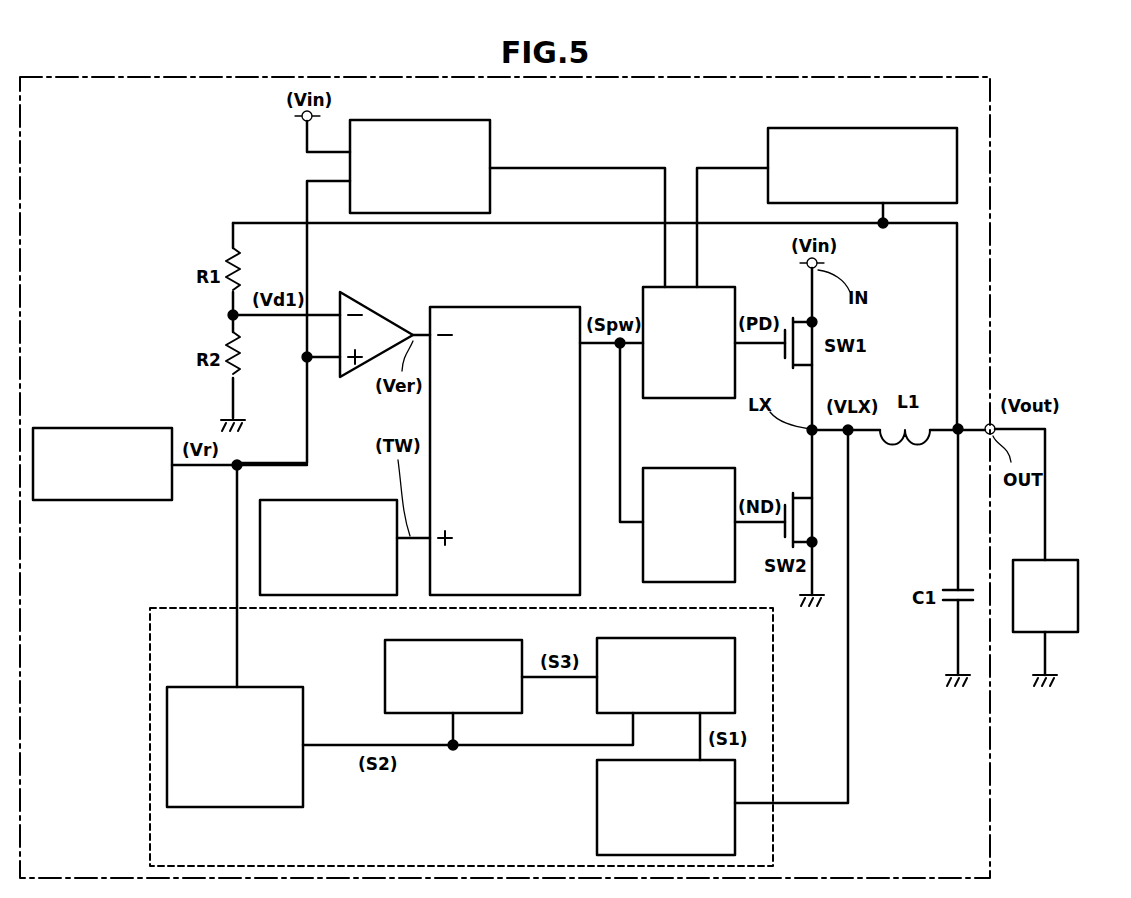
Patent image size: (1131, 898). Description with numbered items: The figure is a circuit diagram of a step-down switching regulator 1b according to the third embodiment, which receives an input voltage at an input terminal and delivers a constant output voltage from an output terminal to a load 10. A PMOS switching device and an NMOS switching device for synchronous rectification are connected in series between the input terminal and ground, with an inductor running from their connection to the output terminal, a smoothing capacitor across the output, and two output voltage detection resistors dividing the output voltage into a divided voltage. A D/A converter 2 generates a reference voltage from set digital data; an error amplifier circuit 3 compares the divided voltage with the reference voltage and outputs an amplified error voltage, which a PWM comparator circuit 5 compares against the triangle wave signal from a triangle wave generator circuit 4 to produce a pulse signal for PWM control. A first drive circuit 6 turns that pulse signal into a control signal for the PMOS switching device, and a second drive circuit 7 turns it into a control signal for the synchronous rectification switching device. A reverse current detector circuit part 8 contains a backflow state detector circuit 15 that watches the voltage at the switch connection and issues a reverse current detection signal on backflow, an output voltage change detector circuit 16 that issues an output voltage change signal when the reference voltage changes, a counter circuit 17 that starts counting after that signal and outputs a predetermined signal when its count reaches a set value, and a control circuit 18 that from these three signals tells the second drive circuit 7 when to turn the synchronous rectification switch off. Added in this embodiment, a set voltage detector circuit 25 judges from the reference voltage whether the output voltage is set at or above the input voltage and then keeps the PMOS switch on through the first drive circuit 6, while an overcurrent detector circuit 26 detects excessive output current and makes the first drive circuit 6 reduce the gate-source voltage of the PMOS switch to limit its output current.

The switching regulator 1b is at (819, 77).
The D/A converter 2 is at (105, 428).
The error amplifier circuit 3 is at (365, 310).
The triangle wave generator circuit 4 is at (332, 500).
The PWM comparator circuit 5 is at (518, 307).
The first drive circuit 6 is at (718, 287).
The second drive circuit 7 is at (718, 468).
The reverse current detector circuit part 8 is at (148, 740).
The load 10 is at (1058, 560).
The backflow state detector circuit 15 is at (597, 803).
The output voltage change detector circuit 16 is at (283, 687).
The counter circuit 17 is at (460, 640).
The control circuit 18 is at (675, 638).
The set voltage detector circuit 25 is at (428, 120).
The overcurrent detector circuit 26 is at (885, 128).